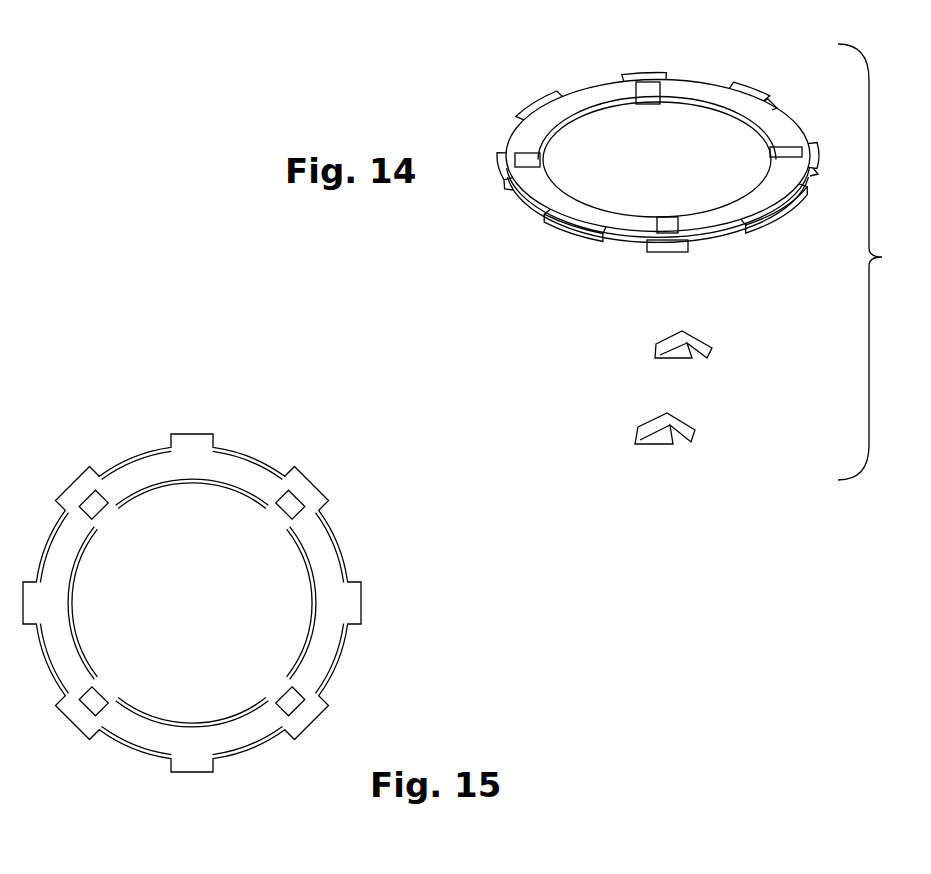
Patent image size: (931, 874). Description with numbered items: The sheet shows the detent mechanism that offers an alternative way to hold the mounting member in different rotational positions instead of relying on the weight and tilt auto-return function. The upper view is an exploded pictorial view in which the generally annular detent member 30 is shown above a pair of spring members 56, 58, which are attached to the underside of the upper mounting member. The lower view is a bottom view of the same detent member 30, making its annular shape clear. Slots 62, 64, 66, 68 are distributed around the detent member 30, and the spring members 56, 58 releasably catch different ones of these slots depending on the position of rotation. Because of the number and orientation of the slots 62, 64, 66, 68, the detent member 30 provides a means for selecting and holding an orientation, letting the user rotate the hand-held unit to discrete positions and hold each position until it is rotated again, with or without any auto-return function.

In FIG. 14, the detent member 30 is at (590, 86).
In FIG. 15, the detent member 30 is at (240, 466).
In FIG. 14, the spring member 56 is at (680, 426).
In FIG. 14, the spring member 58 is at (670, 343).
In FIG. 14, the slot 62 is at (527, 166).
In FIG. 15, the slot 62 is at (100, 497).
In FIG. 14, the slot 64 is at (688, 243).
In FIG. 15, the slot 64 is at (100, 700).
In FIG. 14, the slot 66 is at (790, 150).
In FIG. 15, the slot 66 is at (290, 685).
In FIG. 14, the slot 68 is at (665, 85).
In FIG. 15, the slot 68 is at (290, 508).